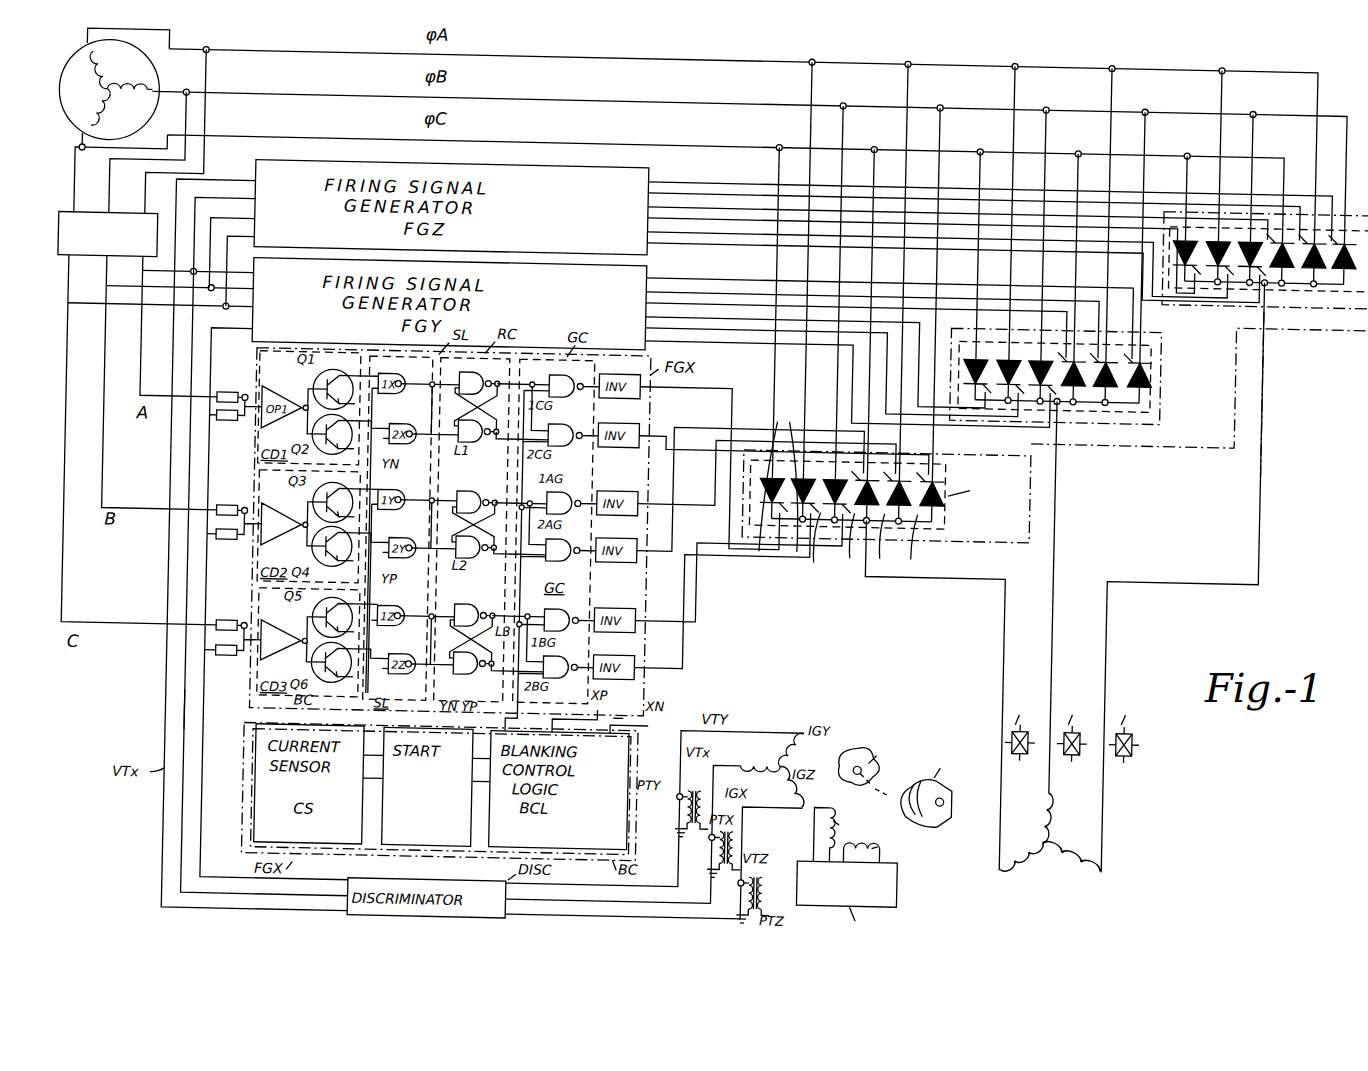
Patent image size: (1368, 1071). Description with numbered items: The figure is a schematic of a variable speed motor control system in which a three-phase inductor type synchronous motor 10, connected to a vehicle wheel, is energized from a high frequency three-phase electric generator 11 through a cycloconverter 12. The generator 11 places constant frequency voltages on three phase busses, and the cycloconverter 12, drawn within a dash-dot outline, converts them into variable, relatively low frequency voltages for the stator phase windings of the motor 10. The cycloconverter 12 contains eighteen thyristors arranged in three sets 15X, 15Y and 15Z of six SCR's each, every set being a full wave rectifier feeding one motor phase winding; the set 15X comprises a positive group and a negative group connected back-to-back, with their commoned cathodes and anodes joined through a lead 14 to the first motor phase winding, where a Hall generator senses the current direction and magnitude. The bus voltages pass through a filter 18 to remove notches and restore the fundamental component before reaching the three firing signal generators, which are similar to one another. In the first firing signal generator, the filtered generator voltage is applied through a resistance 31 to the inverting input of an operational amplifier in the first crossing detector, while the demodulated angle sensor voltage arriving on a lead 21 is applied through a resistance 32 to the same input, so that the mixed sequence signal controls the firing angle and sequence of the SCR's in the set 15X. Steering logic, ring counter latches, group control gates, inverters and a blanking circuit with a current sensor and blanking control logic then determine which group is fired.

The synchronous motor 10 is at (968, 815).
The electric generator 11 is at (74, 62).
The cycloconverter 12 is at (1156, 442).
The lead 14 is at (945, 574).
The filter 18 is at (66, 222).
The lead 21 is at (191, 744).
The resistance 31 is at (226, 402).
The resistance 32 is at (226, 430).
The thyristor set 15X is at (956, 504).
The thyristor set 15Y is at (1160, 380).
The thyristor set 15Z is at (1302, 283).